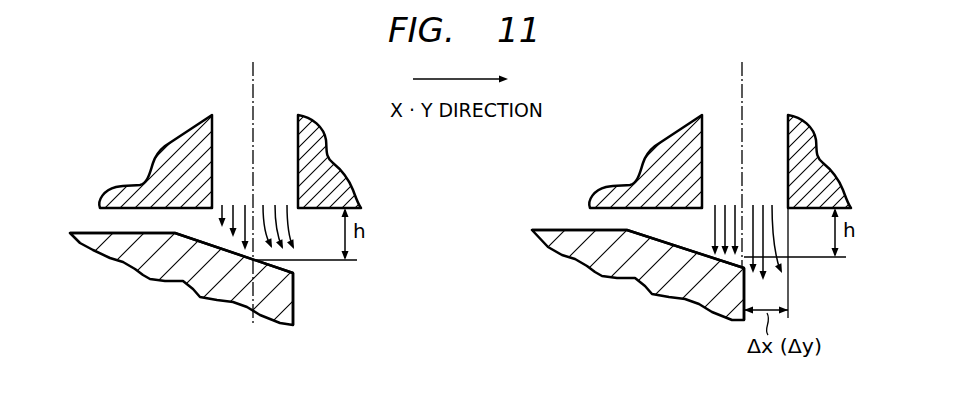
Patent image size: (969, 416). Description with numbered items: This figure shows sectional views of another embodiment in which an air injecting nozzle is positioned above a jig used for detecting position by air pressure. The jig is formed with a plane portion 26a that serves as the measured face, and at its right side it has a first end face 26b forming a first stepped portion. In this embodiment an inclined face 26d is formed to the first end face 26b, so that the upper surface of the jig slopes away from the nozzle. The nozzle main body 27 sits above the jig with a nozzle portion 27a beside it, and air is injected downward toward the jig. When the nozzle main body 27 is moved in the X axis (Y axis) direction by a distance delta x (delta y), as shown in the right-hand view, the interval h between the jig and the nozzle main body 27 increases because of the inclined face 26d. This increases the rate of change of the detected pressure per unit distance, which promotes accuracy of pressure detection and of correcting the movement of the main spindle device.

The nozzle main body 27 is at (173, 161).
The nozzle tip portion 27a is at (298, 150).
The plane portion 26a is at (113, 234).
The inclined face 26d is at (190, 240).
The first end face 26b is at (295, 300).